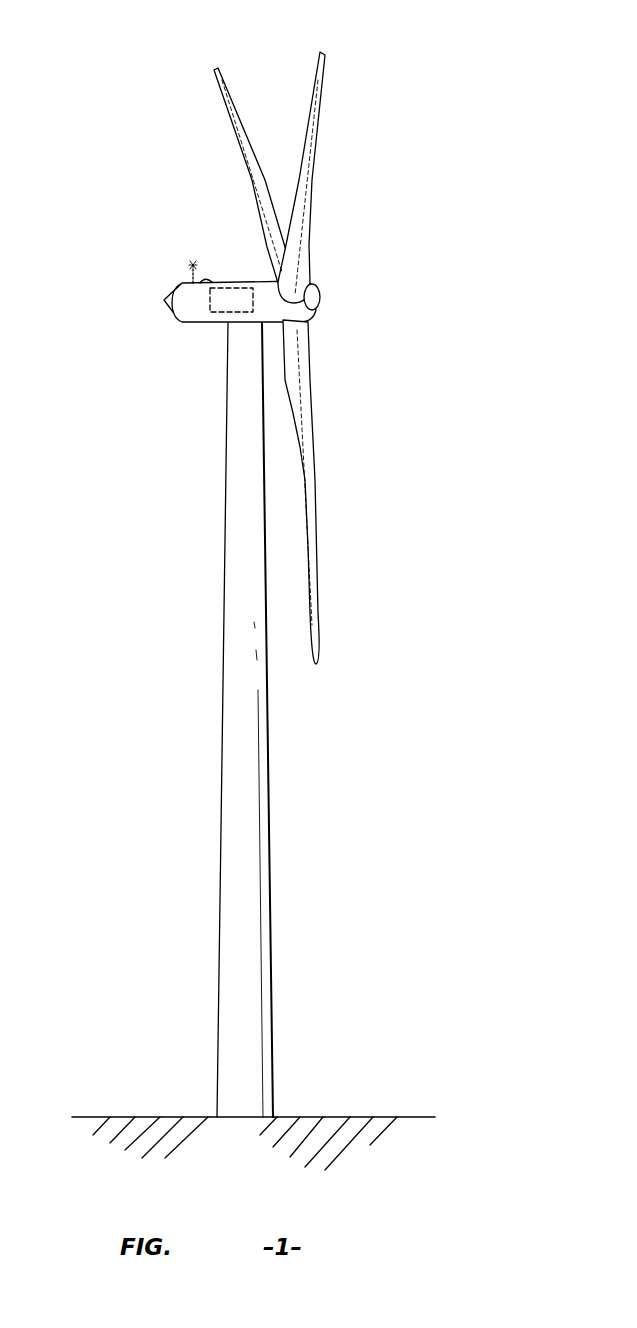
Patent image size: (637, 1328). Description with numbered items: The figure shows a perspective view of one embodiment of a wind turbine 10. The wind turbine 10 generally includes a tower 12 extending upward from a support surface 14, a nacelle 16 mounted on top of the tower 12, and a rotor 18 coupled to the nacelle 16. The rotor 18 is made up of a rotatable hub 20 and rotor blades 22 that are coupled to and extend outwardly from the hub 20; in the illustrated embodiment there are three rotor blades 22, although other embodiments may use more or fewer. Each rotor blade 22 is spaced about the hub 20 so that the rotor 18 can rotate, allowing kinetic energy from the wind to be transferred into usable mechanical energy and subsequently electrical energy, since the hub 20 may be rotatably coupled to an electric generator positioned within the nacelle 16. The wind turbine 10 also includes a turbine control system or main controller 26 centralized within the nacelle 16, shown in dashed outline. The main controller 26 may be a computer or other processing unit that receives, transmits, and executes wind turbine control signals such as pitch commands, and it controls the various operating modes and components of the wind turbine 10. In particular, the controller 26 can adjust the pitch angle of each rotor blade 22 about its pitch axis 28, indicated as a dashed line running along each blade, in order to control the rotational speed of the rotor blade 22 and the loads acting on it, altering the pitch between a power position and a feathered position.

The wind turbine 10 is at (413, 127).
The tower 12 is at (232, 830).
The support surface 14 is at (148, 1117).
The nacelle 16 is at (202, 328).
The rotor 18 is at (293, 349).
The rotatable hub 20 is at (318, 305).
The rotor blade 22 is at (278, 349).
The main controller 26 is at (231, 288).
The pitch axis 28 is at (247, 190).